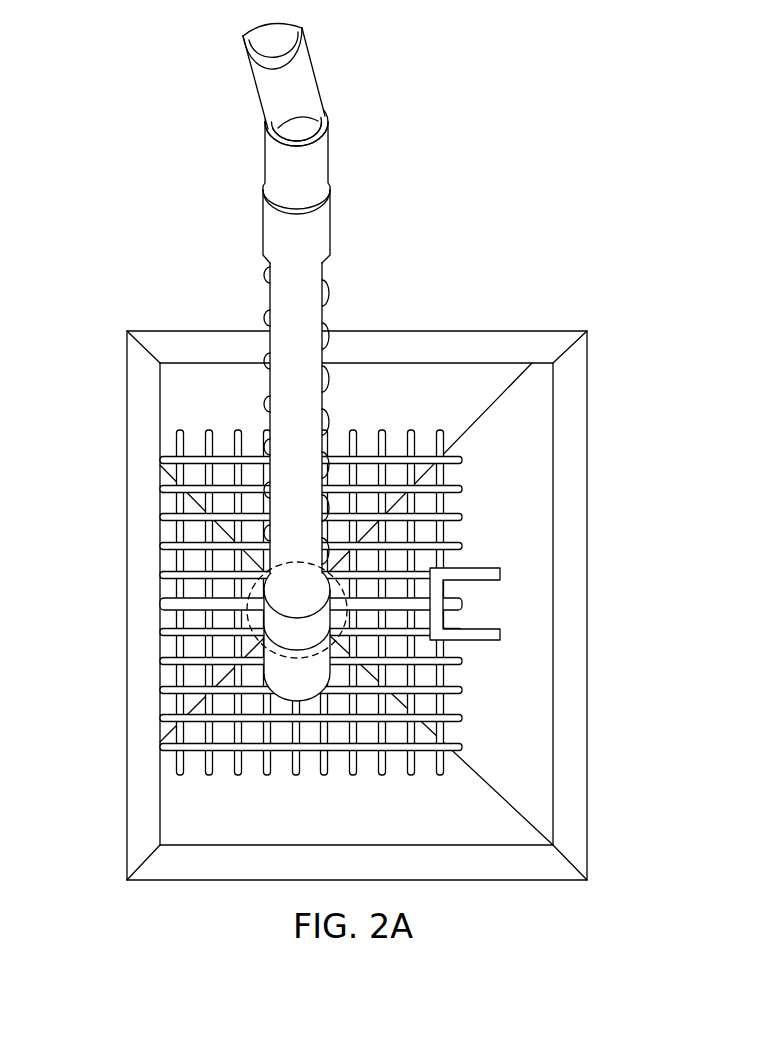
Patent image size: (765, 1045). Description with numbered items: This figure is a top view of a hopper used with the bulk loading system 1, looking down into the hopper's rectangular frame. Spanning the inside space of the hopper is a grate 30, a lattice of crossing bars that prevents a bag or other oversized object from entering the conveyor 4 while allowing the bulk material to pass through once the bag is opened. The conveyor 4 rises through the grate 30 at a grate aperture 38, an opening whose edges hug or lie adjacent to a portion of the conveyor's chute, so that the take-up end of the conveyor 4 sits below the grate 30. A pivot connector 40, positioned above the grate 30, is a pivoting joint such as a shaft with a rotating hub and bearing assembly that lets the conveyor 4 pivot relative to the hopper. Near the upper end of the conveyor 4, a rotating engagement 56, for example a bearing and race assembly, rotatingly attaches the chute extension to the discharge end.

The system 1 is at (369, 452).
The conveyor 4 is at (290, 363).
The grate 30 is at (473, 490).
The grate aperture 38 is at (258, 582).
The pivot connector 40 is at (510, 575).
The rotating engagement 56 is at (263, 186).